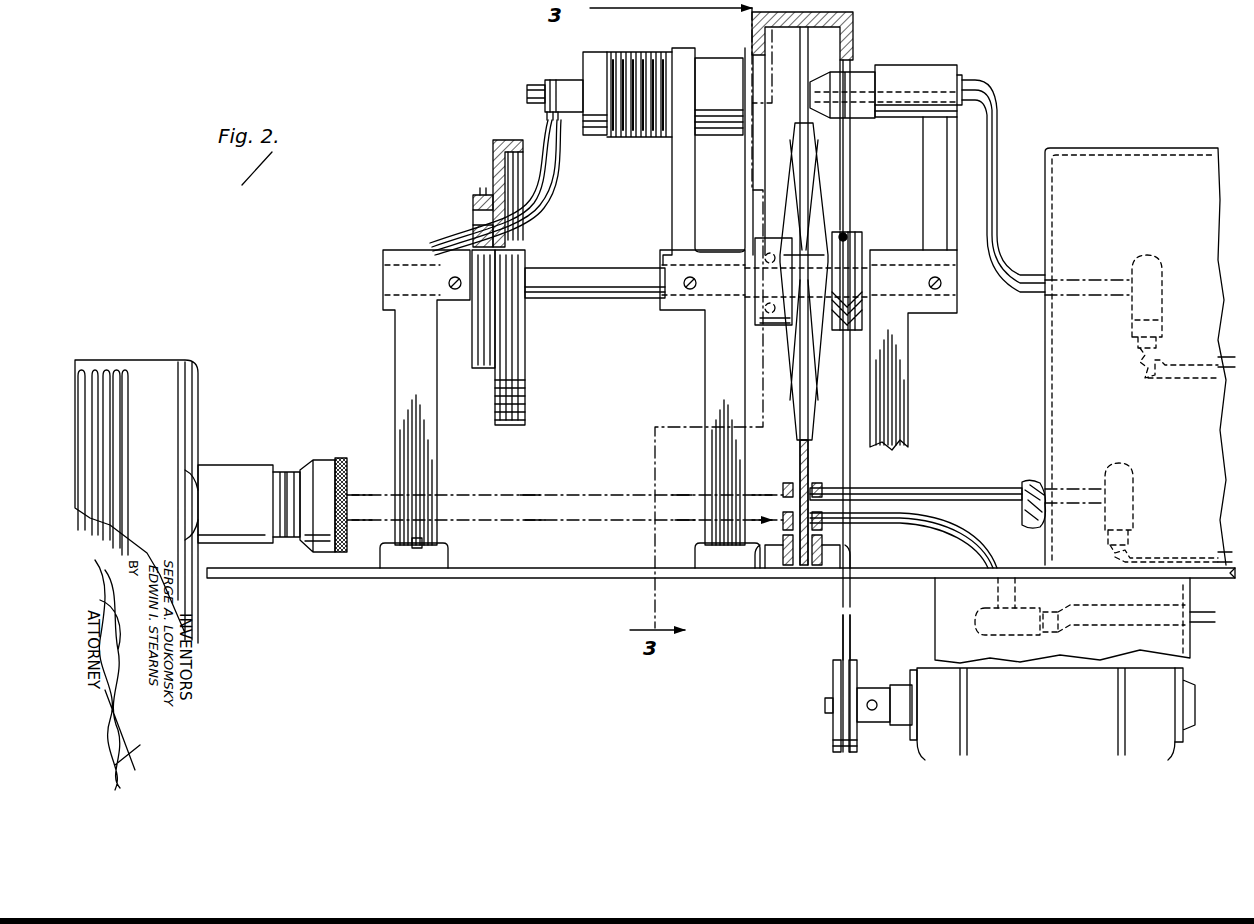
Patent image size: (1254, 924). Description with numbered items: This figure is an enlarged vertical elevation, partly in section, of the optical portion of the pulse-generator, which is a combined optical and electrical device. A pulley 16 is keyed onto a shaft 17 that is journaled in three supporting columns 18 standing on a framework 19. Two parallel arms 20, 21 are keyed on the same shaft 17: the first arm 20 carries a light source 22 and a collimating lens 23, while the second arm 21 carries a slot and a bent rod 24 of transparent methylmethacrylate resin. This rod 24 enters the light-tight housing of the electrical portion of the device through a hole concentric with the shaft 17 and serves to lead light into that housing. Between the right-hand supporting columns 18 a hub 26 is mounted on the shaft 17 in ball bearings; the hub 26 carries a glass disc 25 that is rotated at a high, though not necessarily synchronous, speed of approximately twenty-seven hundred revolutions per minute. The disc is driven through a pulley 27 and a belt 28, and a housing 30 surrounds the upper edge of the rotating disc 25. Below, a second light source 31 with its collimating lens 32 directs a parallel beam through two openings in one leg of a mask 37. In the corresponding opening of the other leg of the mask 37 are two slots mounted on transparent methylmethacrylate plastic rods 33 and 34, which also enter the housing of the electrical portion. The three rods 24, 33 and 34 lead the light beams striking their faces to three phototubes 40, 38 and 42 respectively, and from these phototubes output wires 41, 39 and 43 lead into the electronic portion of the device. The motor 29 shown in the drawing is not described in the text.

The pulley 16 is at (528, 405).
The shaft 17 is at (610, 298).
The supporting columns 18 is at (395, 367).
The framework 19 is at (513, 578).
The arm 20 is at (672, 164).
The arm 21 is at (923, 182).
The light source 22 is at (625, 58).
The collimating lens 23 is at (714, 58).
The bent rod 24 is at (862, 75).
The glass disc 25 is at (800, 452).
The hub 26 is at (762, 245).
The pulley 27 is at (850, 238).
The belt 28 is at (850, 390).
The motor 29 is at (1110, 720).
The housing 30 is at (855, 27).
The second light source 31 is at (230, 466).
The collimating lens 32 is at (327, 462).
The transparent methylmethacrylate plastic rod 33 is at (940, 489).
The transparent methylmethacrylate plastic rod 34 is at (978, 545).
The mask 37 is at (785, 484).
The phototube 38 is at (1122, 463).
The output wire 39 is at (1195, 552).
The phototube 40 is at (1142, 256).
The output wire 41 is at (1218, 375).
The phototube 42 is at (1030, 612).
The output wire 43 is at (1190, 636).